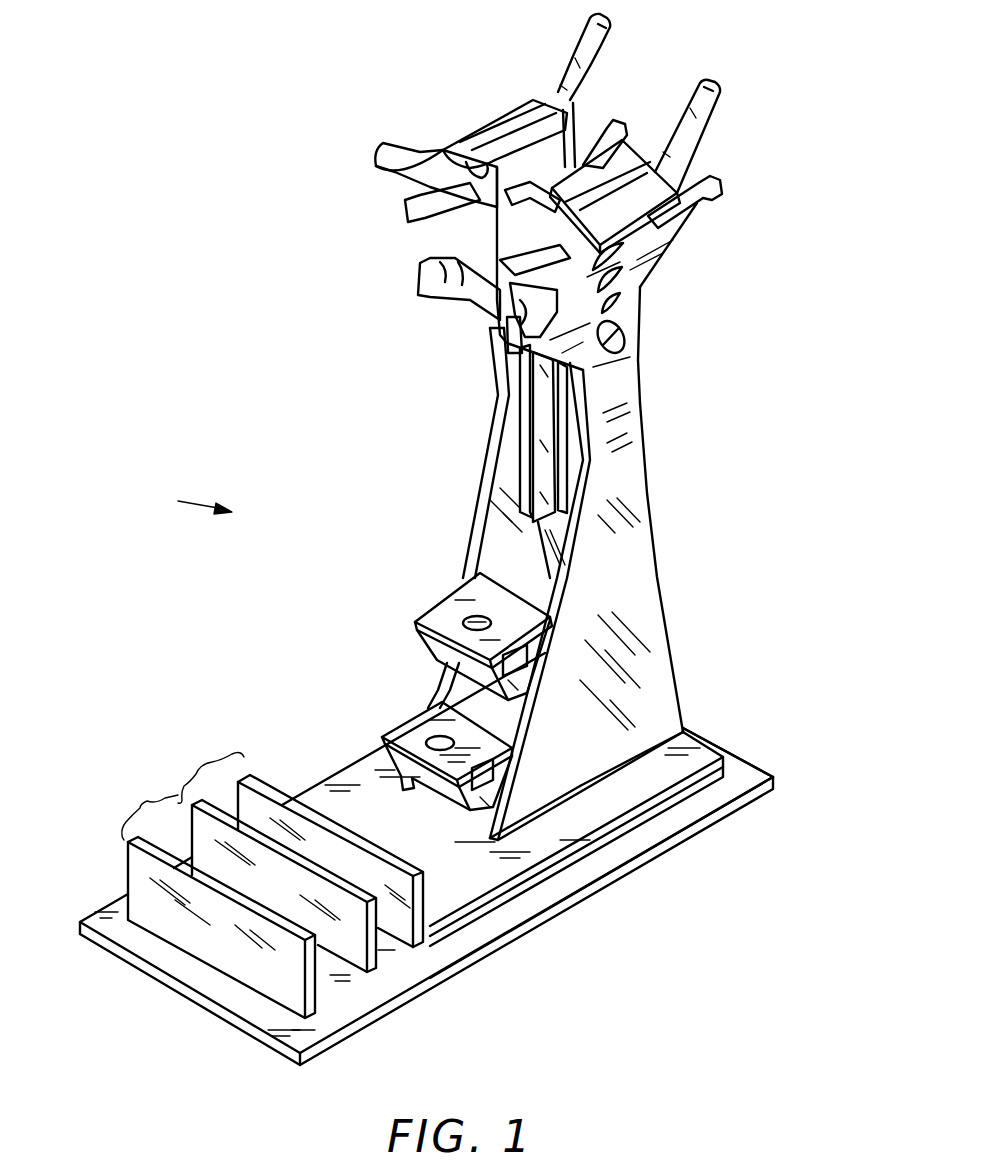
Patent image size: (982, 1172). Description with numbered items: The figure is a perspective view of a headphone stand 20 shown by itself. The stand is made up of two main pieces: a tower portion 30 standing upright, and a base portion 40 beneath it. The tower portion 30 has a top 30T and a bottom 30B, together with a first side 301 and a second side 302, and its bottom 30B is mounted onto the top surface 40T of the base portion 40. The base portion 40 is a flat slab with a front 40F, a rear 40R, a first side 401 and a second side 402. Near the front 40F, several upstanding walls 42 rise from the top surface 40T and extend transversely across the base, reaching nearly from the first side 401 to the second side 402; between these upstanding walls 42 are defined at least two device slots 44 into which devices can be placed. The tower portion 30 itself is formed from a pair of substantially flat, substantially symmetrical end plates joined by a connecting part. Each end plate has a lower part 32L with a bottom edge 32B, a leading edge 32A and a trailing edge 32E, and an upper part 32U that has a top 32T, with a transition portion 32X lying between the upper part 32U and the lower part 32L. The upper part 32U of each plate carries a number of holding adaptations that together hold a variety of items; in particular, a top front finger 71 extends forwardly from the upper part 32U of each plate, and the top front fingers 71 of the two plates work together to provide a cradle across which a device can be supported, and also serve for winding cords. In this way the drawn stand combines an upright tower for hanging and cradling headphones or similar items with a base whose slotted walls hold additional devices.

The headphone stand 20 is at (191, 501).
The tower portion 30 is at (663, 606).
The top 30T is at (541, 133).
The bottom 30B is at (553, 810).
The top 32T is at (457, 143).
The bottom edge 32B is at (638, 833).
The upper part 32U is at (640, 317).
The transition portion 32X is at (633, 405).
The lower part 32L is at (667, 643).
The trailing edge 32E is at (657, 577).
The leading edge 32A is at (470, 562).
The first side 301 is at (627, 487).
The second side 302 is at (489, 460).
The base portion 40 is at (773, 789).
The top surface 40T is at (703, 757).
The rear 40R is at (743, 760).
The front 40F is at (187, 993).
The first side 401 is at (523, 933).
The second side 402 is at (337, 770).
The upstanding walls 42 is at (127, 877).
The device slots 44 is at (181, 789).
The top front finger 71 is at (377, 147).